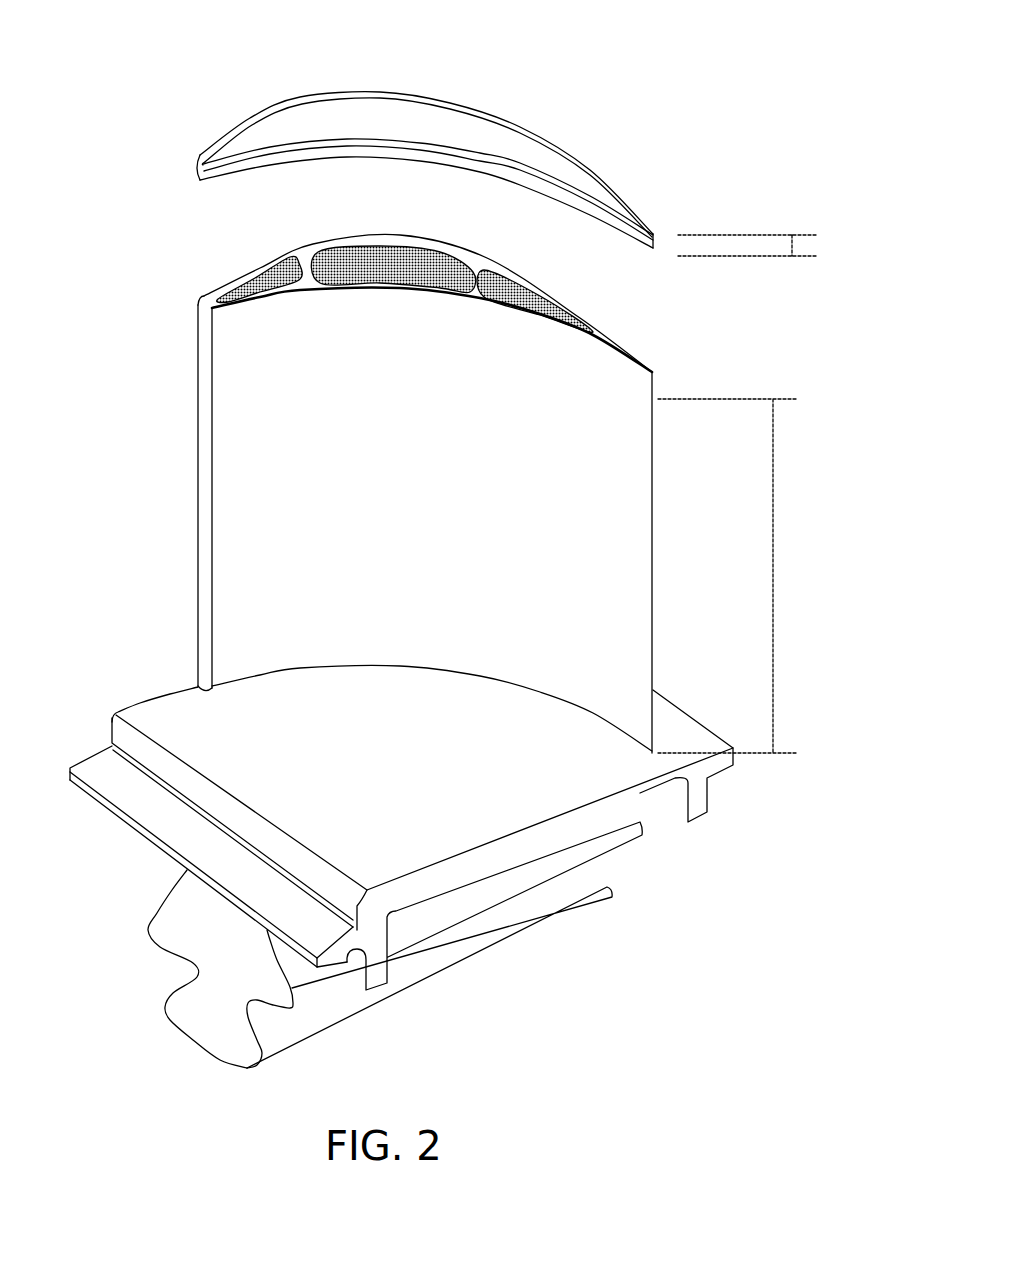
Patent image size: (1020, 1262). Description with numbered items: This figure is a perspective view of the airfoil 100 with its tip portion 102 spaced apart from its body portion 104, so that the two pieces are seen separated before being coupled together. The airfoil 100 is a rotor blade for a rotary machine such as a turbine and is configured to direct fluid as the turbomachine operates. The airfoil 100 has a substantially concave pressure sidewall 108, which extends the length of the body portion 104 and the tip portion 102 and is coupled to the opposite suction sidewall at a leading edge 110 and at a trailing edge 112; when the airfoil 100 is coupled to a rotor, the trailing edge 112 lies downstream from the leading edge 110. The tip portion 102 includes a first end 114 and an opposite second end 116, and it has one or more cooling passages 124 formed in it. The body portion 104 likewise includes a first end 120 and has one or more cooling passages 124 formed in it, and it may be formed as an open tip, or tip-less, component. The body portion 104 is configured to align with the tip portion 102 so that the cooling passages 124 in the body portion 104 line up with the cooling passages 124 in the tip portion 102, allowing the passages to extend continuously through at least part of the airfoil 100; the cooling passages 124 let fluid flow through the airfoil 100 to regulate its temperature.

The airfoil 100 is at (632, 98).
The tip portion 102 is at (792, 245).
The body portion 104 is at (773, 567).
The pressure sidewall 108 is at (245, 545).
The leading edge 110 is at (198, 392).
The trailing edge 112 is at (652, 493).
The first end 114 is at (567, 205).
The second end 116 is at (277, 108).
The first end 120 is at (610, 730).
The cooling passages 124 is at (273, 273).